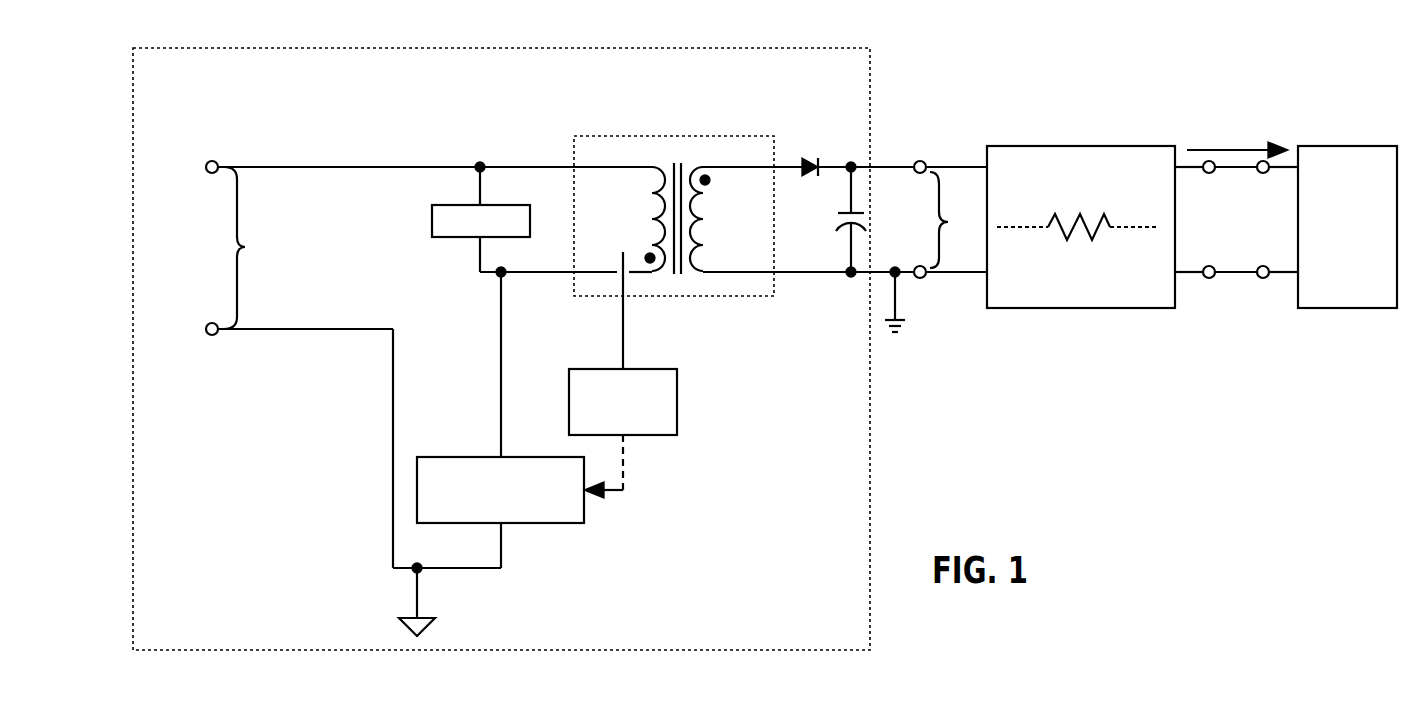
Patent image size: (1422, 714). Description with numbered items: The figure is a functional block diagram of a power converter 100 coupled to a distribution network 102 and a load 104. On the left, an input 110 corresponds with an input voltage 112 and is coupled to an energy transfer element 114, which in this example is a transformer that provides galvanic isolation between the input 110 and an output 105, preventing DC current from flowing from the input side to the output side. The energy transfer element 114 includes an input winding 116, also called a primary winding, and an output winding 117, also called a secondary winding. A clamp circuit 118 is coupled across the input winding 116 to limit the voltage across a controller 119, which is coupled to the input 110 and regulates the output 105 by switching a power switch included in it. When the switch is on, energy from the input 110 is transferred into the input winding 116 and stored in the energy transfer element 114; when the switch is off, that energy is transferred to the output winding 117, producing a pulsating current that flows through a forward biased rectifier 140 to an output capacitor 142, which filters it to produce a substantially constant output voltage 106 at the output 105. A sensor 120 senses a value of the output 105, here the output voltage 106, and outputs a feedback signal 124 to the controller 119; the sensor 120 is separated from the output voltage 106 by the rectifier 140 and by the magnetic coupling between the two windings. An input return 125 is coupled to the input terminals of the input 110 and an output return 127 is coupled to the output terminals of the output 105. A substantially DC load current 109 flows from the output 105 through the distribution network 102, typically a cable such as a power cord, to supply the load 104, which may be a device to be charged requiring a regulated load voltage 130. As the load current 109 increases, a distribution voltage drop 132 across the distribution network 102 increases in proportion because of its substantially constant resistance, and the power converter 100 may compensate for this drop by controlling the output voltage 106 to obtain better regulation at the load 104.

The power converter 100 is at (500, 96).
The distribution network 102 is at (1060, 146).
The load 104 is at (1345, 312).
The output 105 is at (960, 220).
The output voltage 106 is at (900, 207).
The load current 109 is at (1237, 118).
The input 110 is at (257, 248).
The input voltage 112 is at (212, 245).
The energy transfer element 114 is at (653, 136).
The input winding 116 is at (652, 215).
The output winding 117 is at (699, 236).
The clamp circuit 118 is at (432, 222).
The controller 119 is at (525, 525).
The sensor 120 is at (677, 436).
The feedback signal 124 is at (630, 503).
The input return 125 is at (420, 592).
The output return 127 is at (901, 302).
The load voltage 130 is at (1242, 224).
The distribution voltage drop 132 is at (1080, 268).
The rectifier 140 is at (818, 158).
The output capacitor 142 is at (840, 221).